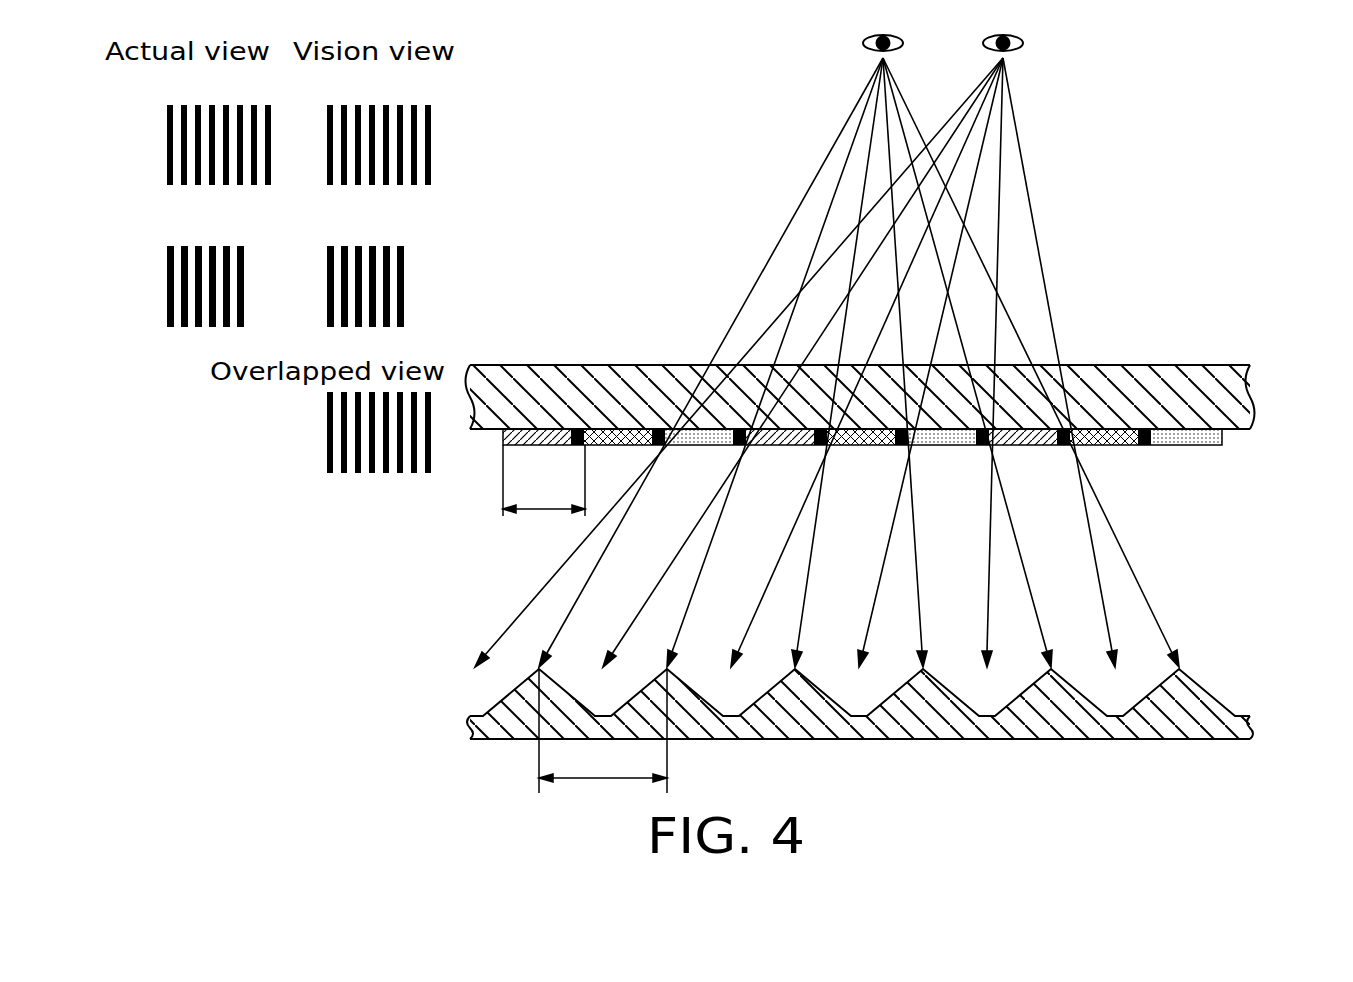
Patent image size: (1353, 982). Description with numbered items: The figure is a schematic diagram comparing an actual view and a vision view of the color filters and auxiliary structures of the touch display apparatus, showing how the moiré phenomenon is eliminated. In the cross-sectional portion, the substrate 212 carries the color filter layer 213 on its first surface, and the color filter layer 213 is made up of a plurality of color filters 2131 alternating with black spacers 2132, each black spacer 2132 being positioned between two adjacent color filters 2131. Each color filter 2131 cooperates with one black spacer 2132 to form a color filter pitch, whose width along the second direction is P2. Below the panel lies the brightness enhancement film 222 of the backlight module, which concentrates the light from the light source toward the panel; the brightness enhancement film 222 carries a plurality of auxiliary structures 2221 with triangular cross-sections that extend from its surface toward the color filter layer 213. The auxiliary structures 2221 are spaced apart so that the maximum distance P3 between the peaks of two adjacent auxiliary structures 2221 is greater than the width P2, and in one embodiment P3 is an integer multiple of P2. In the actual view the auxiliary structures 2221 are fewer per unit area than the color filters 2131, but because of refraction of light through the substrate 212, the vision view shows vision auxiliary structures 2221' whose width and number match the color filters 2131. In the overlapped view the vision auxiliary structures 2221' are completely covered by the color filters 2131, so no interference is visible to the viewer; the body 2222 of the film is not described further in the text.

The substrate 212 is at (1137, 377).
The color filter layer 213 is at (701, 314).
The color filters 2131 is at (1185, 446).
The black spacers 2132 is at (1147, 446).
The brightness enhancement film 222 is at (654, 517).
The auxiliary structures 2221 is at (652, 481).
The vision auxiliary structures 2221' is at (333, 359).
The prism sheet body 2222 is at (1130, 685).
The width of the color filter pitch P2 is at (544, 480).
The maximum distance between peaks of two adjacent auxiliary structures P3 is at (603, 731).